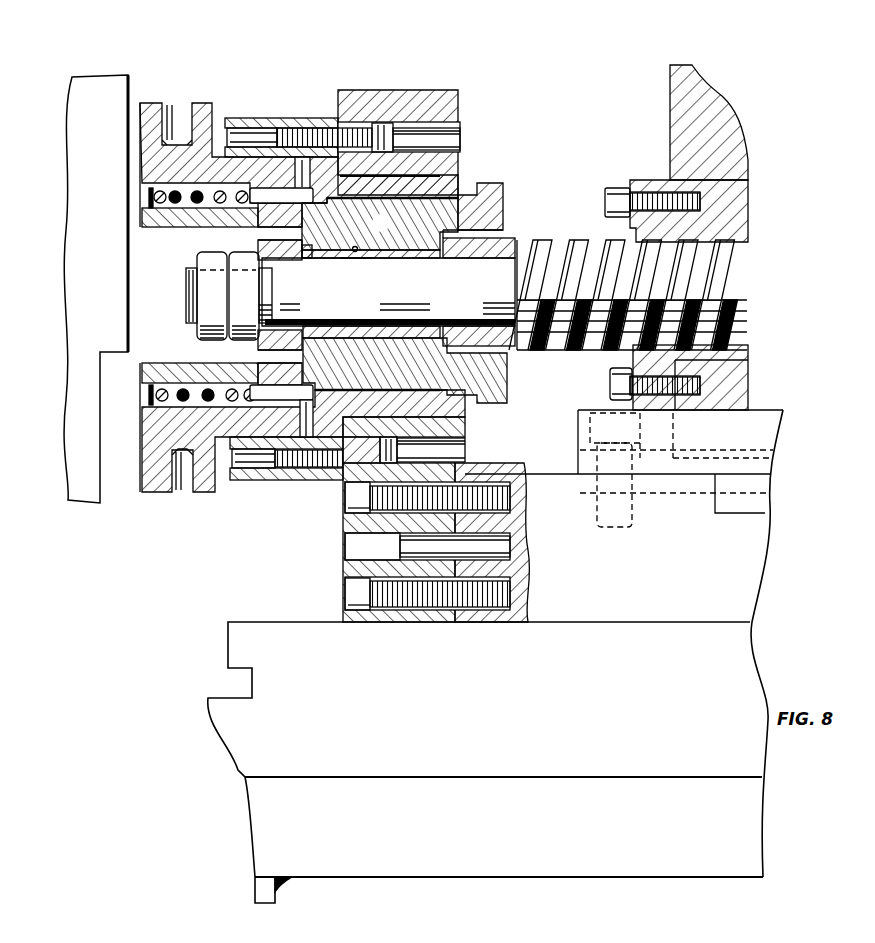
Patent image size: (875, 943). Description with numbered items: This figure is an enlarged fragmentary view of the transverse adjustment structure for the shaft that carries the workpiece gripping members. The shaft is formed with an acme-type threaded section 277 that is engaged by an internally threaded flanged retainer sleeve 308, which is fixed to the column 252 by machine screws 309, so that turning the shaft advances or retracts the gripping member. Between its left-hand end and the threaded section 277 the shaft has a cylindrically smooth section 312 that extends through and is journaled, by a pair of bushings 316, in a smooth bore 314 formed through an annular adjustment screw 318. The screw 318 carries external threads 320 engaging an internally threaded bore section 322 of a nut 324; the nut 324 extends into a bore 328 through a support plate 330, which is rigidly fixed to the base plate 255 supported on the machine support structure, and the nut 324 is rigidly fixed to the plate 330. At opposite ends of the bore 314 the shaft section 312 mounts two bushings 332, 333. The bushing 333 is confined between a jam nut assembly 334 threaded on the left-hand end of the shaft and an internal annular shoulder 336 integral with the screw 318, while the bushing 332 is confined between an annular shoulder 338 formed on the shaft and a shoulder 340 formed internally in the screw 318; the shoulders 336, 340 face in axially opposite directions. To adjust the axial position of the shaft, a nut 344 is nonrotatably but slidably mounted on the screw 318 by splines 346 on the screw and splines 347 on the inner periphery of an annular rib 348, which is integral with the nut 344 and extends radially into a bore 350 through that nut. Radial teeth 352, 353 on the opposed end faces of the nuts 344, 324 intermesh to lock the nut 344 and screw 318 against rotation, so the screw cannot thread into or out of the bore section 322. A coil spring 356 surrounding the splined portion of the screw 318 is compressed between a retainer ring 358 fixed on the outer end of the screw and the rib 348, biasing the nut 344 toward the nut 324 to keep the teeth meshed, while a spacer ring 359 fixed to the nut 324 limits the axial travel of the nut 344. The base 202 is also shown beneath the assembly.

The base 202 is at (316, 622).
The column 252 is at (672, 99).
The base plate 255 is at (581, 589).
The threaded section 277 is at (695, 237).
The flanged retainer sleeve 308 is at (713, 223).
The machine screw 309 is at (612, 190).
The cylindrically smooth section 312 is at (413, 258).
The bore 314 is at (338, 259).
The bushing 316 is at (355, 260).
The adjustment screw 318 is at (313, 125).
The external threads 320 is at (417, 176).
The internally threaded bore section 322 is at (405, 320).
The nut 324 is at (345, 472).
The bore 328 is at (343, 455).
The support plate 330 is at (406, 90).
The bushing 332 is at (506, 250).
The bushing 333 is at (262, 337).
The jam nut assembly 334 is at (198, 262).
The internal annular shoulder 336 is at (265, 316).
The shoulder 338 is at (517, 275).
The shoulder 340 is at (478, 322).
The nut 344 is at (136, 420).
The splines 346 is at (213, 190).
The splines 347 is at (265, 228).
The annular rib 348 is at (287, 190).
The bore 350 is at (167, 212).
The radial teeth 352 is at (285, 108).
The radial teeth 353 is at (275, 472).
The coil spring 356 is at (204, 206).
The retainer ring 358 is at (146, 197).
The spacer ring 359 is at (232, 117).